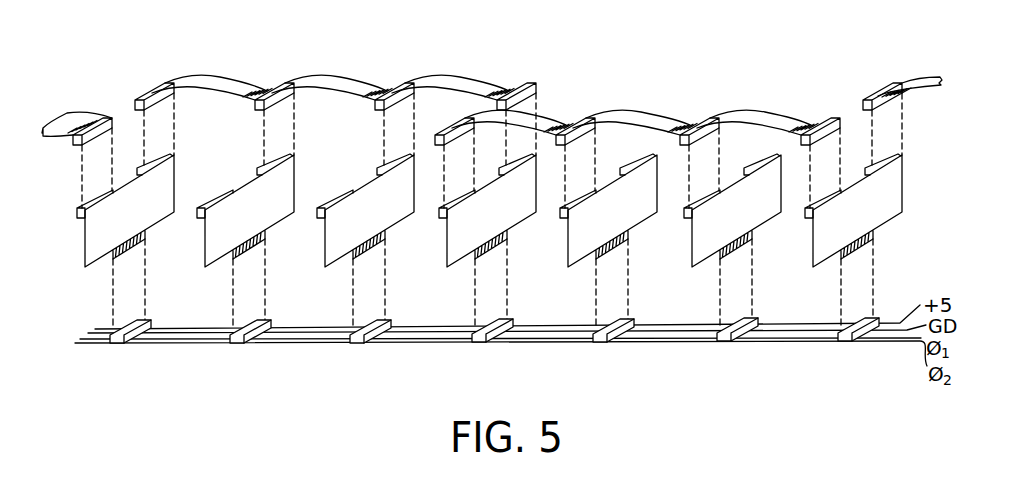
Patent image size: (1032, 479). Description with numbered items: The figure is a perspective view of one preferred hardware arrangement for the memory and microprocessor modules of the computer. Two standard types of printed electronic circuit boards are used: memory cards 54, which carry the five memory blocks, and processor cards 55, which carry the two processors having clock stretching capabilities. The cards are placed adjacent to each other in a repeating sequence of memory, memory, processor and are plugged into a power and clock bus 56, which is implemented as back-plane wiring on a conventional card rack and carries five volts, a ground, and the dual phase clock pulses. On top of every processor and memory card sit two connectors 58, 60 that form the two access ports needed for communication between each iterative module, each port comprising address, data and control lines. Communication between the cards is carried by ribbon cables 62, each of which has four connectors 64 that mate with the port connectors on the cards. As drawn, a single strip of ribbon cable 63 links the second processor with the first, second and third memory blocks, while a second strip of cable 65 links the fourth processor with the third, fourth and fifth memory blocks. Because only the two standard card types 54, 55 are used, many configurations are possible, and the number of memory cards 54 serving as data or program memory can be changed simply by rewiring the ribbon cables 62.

The memory printed circuit card 54 is at (92, 268).
The processor printed circuit card 55 is at (332, 268).
The power and clock bus 56 is at (502, 343).
The connector 58 is at (79, 218).
The connector 60 is at (143, 170).
The ribbon cable 62 is at (492, 78).
The strip of ribbon cable 63 is at (353, 80).
The ribbon cable connector 64 is at (165, 83).
The second strip of cable 65 is at (667, 115).